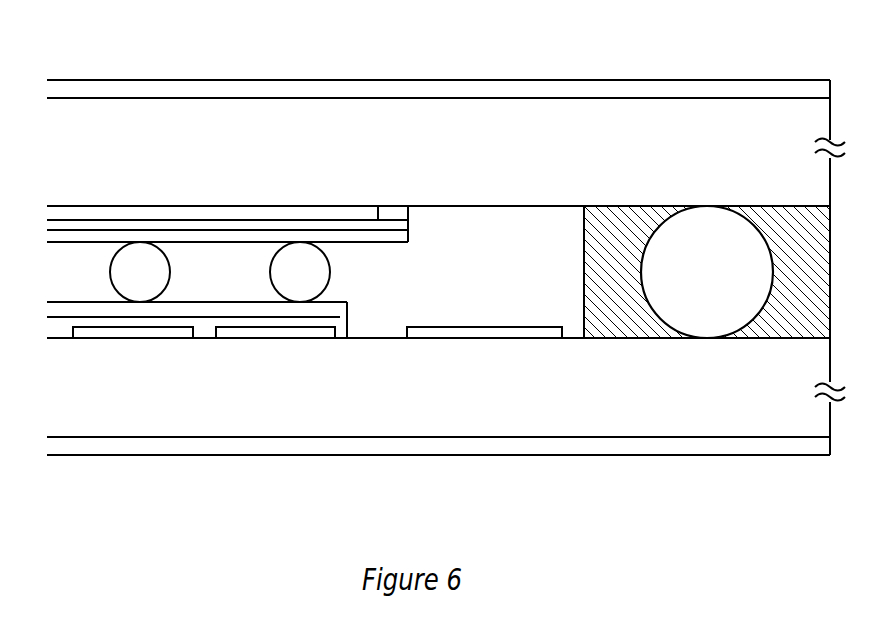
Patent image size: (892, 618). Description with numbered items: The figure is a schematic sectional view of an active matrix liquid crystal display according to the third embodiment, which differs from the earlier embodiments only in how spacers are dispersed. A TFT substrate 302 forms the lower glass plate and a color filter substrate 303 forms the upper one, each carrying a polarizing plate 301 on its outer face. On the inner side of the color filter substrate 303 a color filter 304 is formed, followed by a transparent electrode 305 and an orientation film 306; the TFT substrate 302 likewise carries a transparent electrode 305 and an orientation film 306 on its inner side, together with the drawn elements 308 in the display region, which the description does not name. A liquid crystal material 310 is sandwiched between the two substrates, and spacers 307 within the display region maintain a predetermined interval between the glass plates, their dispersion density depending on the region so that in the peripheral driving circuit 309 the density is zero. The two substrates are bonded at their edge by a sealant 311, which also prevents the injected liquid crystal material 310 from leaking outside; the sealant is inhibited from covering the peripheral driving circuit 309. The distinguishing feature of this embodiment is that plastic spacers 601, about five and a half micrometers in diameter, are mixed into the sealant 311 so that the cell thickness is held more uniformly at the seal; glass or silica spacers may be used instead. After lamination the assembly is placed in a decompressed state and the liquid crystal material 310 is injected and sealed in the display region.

The polarizing plate 301 is at (100, 88).
The TFT substrate 302 is at (383, 399).
The color filter substrate 303 is at (510, 154).
The color filter 304 is at (173, 212).
The transparent electrode 305 is at (265, 225).
The orientation film 306 is at (341, 311).
The spacers 307 is at (322, 288).
The lower electrodes 308 is at (132, 333).
The peripheral driving circuit 309 is at (485, 332).
The liquid crystal material 310 is at (549, 257).
The sealant 311 is at (635, 247).
The plastic spacers 601 is at (726, 287).